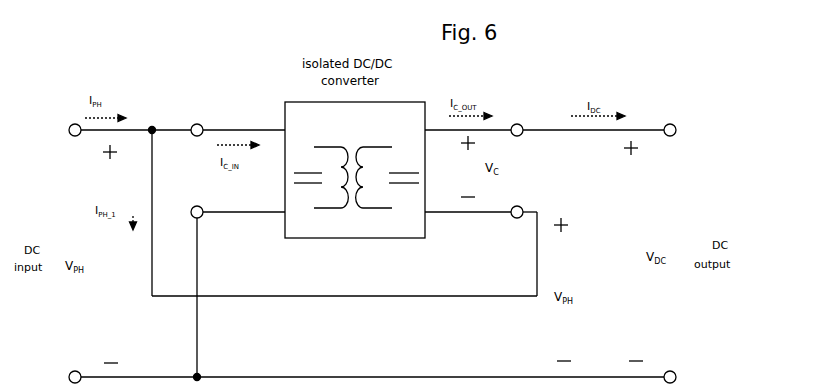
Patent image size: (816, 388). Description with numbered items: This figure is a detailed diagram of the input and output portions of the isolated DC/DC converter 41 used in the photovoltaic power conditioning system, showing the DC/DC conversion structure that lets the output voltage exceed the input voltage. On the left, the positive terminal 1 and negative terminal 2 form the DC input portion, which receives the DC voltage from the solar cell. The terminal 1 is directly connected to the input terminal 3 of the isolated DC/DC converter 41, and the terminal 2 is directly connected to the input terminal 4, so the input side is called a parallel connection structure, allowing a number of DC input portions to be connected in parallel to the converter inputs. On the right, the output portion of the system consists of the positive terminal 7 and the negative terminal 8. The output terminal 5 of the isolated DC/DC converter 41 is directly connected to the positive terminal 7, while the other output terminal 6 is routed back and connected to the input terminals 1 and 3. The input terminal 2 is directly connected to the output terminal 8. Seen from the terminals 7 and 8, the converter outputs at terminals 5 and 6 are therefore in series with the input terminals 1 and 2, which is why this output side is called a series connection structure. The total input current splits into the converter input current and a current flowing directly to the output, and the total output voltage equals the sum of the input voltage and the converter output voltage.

The positive terminal of the DC input portion 1 is at (75, 123).
The negative terminal of the DC input portion 2 is at (75, 370).
The input terminal of the isolated DC/DC converter 3 is at (221, 122).
The input terminal of the isolated DC/DC converter 4 is at (220, 205).
The output terminal of the isolated DC/DC converter 5 is at (517, 121).
The output terminal of the isolated DC/DC converter 6 is at (517, 204).
The positive terminal of the output portion 7 is at (670, 120).
The negative terminal of the output portion 8 is at (670, 367).
The isolated DC/DC converter 41 is at (284, 104).